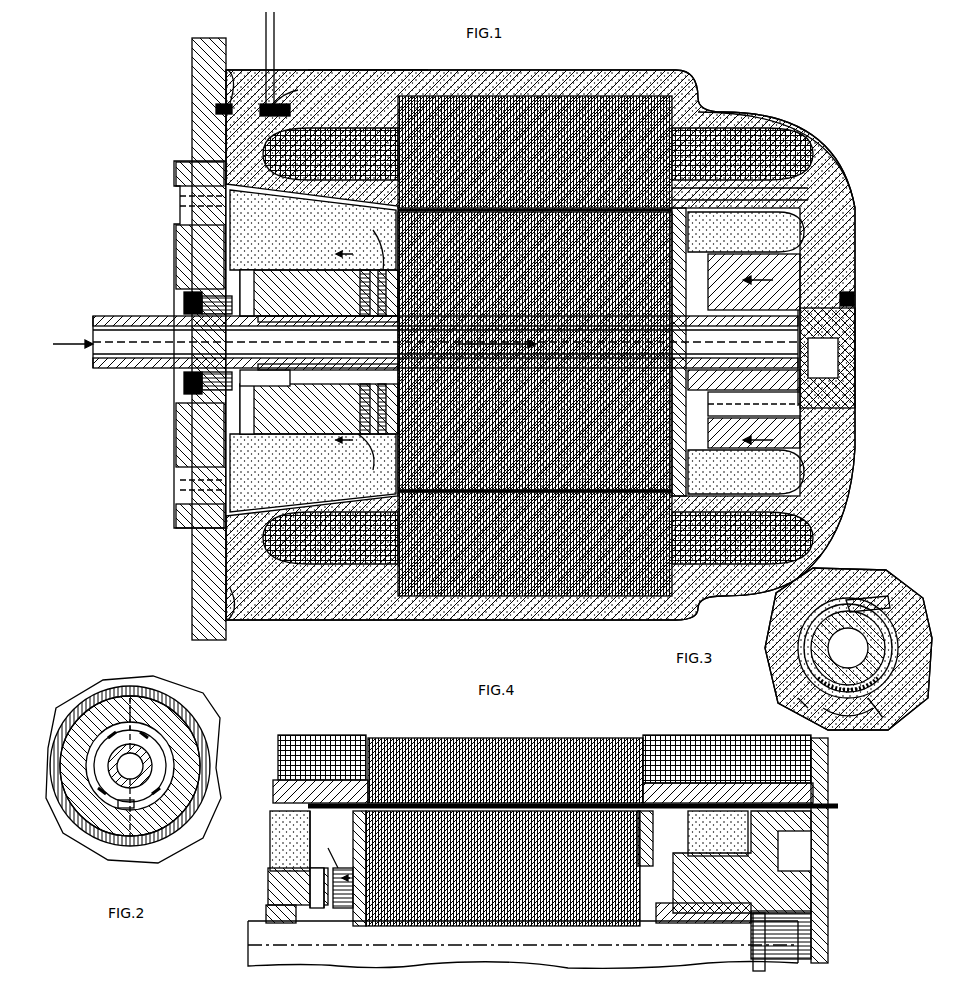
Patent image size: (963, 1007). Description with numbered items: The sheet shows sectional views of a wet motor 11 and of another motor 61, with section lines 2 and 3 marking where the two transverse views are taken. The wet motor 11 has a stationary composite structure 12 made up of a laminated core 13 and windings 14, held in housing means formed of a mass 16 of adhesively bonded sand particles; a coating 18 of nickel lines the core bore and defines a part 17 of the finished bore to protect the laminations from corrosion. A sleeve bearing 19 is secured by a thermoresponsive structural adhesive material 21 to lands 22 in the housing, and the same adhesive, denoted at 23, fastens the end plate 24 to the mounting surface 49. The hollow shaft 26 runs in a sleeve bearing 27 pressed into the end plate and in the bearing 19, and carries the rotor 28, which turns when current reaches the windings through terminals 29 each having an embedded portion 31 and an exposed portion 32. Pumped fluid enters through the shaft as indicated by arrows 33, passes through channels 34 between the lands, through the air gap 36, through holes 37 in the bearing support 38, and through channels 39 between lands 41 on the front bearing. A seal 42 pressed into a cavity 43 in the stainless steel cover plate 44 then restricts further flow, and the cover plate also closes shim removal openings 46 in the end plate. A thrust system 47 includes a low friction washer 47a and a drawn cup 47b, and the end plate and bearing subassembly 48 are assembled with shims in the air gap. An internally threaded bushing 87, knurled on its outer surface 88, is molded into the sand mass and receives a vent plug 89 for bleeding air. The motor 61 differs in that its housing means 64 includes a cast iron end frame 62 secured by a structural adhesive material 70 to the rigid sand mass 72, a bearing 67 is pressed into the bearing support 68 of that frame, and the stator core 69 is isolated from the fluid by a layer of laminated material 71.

In FIG. 1, the section line 2— 2 is at (338, 346).
In FIG. 4, the section line 2— 2 is at (339, 885).
In FIG. 1, the section line 3— 3 is at (746, 250).
In FIG. 1, the wet motor 11 is at (660, 50).
In FIG. 1, the stationary composite structure 12 is at (700, 104).
In FIG. 1, the laminated core 13 is at (548, 110).
In FIG. 1, the windings 14 is at (790, 150).
In FIG. 1, the mass of sand particles 16 is at (355, 62).
In FIG. 1, the part of the finished bore 17 is at (700, 178).
In FIG. 1, the coating of nickel 18 is at (700, 190).
In FIG. 1, the sleeve bearing 19 is at (712, 300).
In FIG. 3, the sleeve bearing 19 is at (858, 680).
In FIG. 1, the thermoresponsive structural adhesive material 21 is at (790, 290).
In FIG. 3, the thermoresponsive structural adhesive material 21 is at (870, 585).
In FIG. 3, the lands 22 is at (852, 590).
In FIG. 1, the adhesive material 23 is at (208, 100).
In FIG. 1, the end plate 24 is at (184, 77).
In FIG. 2, the end plate 24 is at (195, 685).
In FIG. 1, the hollow shaft 26 is at (330, 312).
In FIG. 3, the hollow shaft 26 is at (848, 648).
In FIG. 4, the hollow shaft 26 is at (458, 935).
In FIG. 1, the sleeve bearing 27 is at (285, 312).
In FIG. 2, the sleeve bearing 27 is at (144, 755).
In FIG. 4, the sleeve bearing 27 is at (260, 903).
In FIG. 1, the rotor 28 is at (600, 300).
In FIG. 4, the rotor 28 is at (595, 890).
In FIG. 1, the terminals 29 is at (268, 50).
In FIG. 1, the embedded portion 31 is at (282, 96).
In FIG. 1, the exposed portion 32 is at (268, 20).
In FIG. 1, the arrows 33 is at (66, 330).
In FIG. 1, the channels 34 is at (760, 385).
In FIG. 3, the channels 34 is at (790, 615).
In FIG. 1, the air gap 36 is at (380, 205).
In FIG. 4, the air gap 36 is at (290, 841).
In FIG. 1, the holes 37 is at (238, 270).
In FIG. 2, the holes 37 is at (124, 690).
In FIG. 4, the holes 37 is at (304, 858).
In FIG. 1, the bearing support 38 is at (262, 280).
In FIG. 2, the bearing support 38 is at (90, 700).
In FIG. 4, the bearing support 38 is at (262, 878).
In FIG. 1, the channels 39 is at (282, 370).
In FIG. 2, the channels 39 is at (128, 798).
In FIG. 2, the lands 41 is at (134, 728).
In FIG. 1, the seal 42 is at (194, 291).
In FIG. 1, the cavity 43 is at (178, 288).
In FIG. 1, the cover plate 44 is at (166, 238).
In FIG. 1, the shim removal openings 46 is at (185, 214).
In FIG. 1, the thrust system 47 is at (352, 262).
In FIG. 4, the thrust system 47 is at (326, 854).
In FIG. 1, the low friction washer 47a is at (364, 457).
In FIG. 1, the drawn cup 47b is at (379, 243).
In FIG. 4, the drawn cup 47b is at (340, 858).
In FIG. 1, the bearing subassembly 48 is at (200, 405).
In FIG. 2, the bearing subassembly 48 is at (68, 832).
In FIG. 1, the mounting surface 49 is at (226, 70).
In FIG. 4, the motor 61 is at (335, 752).
In FIG. 4, the cast iron end frame 62 is at (812, 790).
In FIG. 4, the housing means 64 is at (770, 745).
In FIG. 4, the bearing 67 is at (706, 905).
In FIG. 4, the bearing support 68 is at (710, 886).
In FIG. 4, the stator core 69 is at (490, 750).
In FIG. 4, the structural adhesive material 70 is at (740, 820).
In FIG. 4, the layer of laminated material 71 is at (640, 800).
In FIG. 4, the rigid sand mass 72 is at (790, 782).
In FIG. 1, the internally threaded bushing 87 is at (846, 308).
In FIG. 1, the outer surface 88 is at (846, 290).
In FIG. 1, the vent plug 89 is at (846, 352).